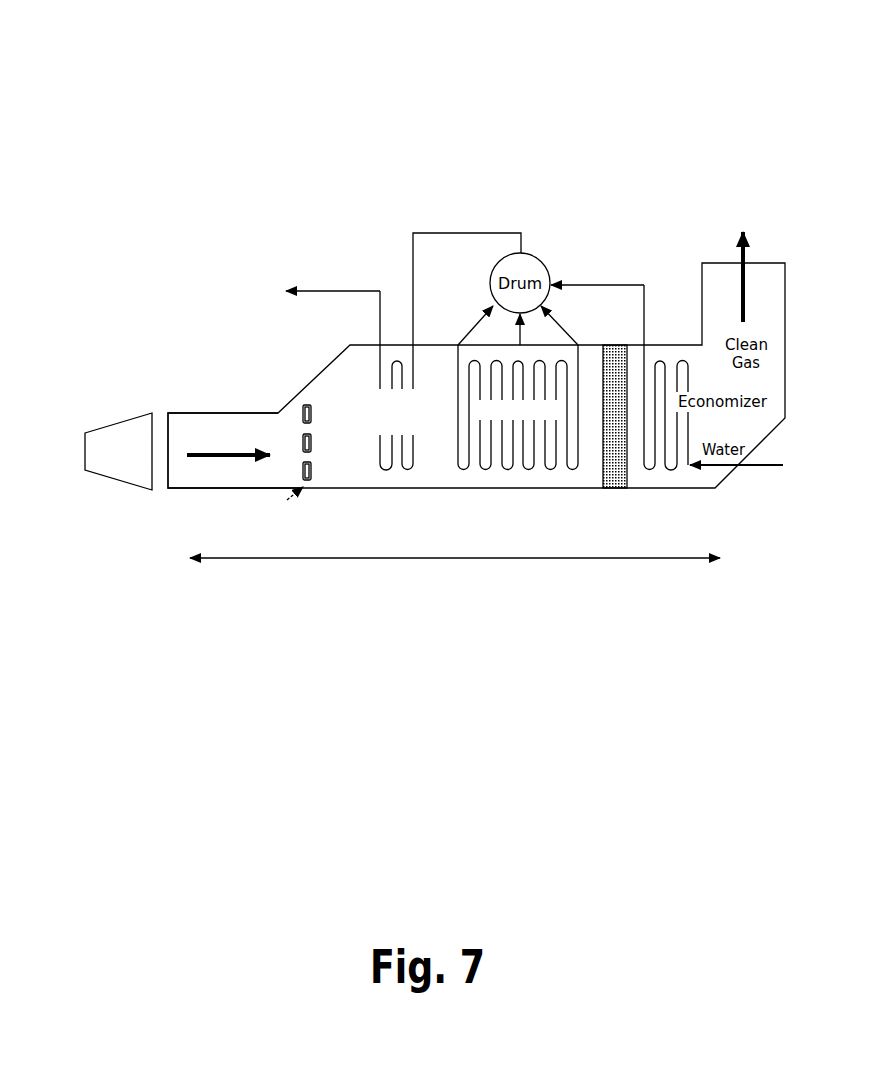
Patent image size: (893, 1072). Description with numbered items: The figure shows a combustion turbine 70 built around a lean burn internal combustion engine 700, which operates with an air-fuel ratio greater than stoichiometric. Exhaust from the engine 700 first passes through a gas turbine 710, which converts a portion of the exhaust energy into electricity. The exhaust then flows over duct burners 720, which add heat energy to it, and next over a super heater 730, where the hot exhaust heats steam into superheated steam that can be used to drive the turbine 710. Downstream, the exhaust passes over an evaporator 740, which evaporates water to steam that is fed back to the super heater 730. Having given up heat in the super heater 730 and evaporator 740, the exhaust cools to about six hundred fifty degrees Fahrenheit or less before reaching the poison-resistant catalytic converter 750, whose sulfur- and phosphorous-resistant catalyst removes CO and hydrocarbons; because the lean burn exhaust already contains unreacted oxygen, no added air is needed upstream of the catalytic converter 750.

The combustion turbine 70 is at (110, 57).
The lean burn internal combustion engine 700 is at (135, 463).
The gas turbine 710 is at (197, 398).
The duct burners 720 is at (316, 398).
The super heater 730 is at (362, 421).
The evaporator 740 is at (451, 421).
The poison-resistant catalytic converter 750 is at (610, 338).